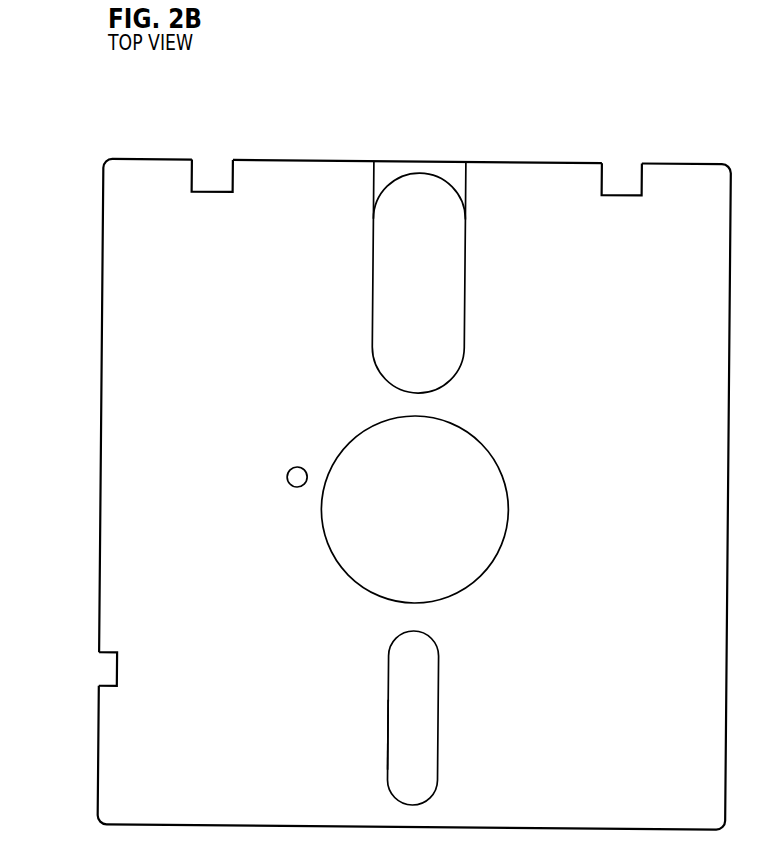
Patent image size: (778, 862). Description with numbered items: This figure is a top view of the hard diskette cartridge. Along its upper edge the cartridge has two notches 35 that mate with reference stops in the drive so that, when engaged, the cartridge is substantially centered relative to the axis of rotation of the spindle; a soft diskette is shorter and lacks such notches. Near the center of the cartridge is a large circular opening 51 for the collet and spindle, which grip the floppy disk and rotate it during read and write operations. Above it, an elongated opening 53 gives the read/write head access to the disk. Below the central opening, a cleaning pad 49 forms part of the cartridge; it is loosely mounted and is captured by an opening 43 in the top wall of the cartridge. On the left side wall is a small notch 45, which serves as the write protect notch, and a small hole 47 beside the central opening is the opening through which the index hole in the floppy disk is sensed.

The notches 35 is at (214, 169).
The write protect notch 45 is at (106, 669).
The opening 53 is at (443, 296).
The opening 51 is at (485, 498).
The hole 47 is at (297, 477).
The cleaning pad 49 is at (417, 725).
The opening 43 is at (388, 742).